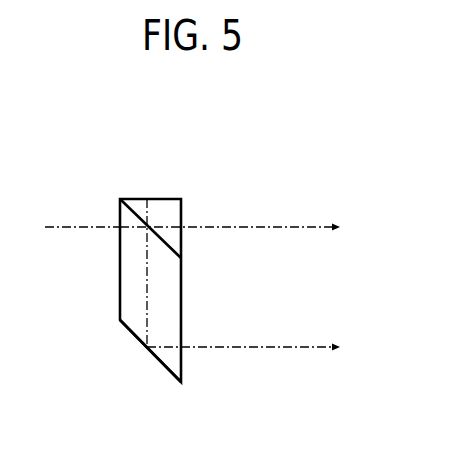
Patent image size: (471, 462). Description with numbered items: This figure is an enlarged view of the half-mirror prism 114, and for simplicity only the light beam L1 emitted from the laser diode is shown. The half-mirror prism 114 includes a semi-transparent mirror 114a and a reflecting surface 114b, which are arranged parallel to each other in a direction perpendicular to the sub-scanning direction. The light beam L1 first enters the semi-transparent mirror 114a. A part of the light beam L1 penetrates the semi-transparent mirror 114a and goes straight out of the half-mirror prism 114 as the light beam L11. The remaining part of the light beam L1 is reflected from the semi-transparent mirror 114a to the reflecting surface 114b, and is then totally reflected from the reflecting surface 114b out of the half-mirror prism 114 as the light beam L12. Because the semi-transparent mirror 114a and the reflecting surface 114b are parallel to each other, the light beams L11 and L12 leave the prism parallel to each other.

The half-mirror prism 114 is at (199, 211).
The semi-transparent mirror 114a is at (143, 221).
The reflecting surface 114b is at (128, 328).
The light beam L1 is at (95, 224).
The light beam L11 is at (233, 230).
The light beam L12 is at (238, 350).